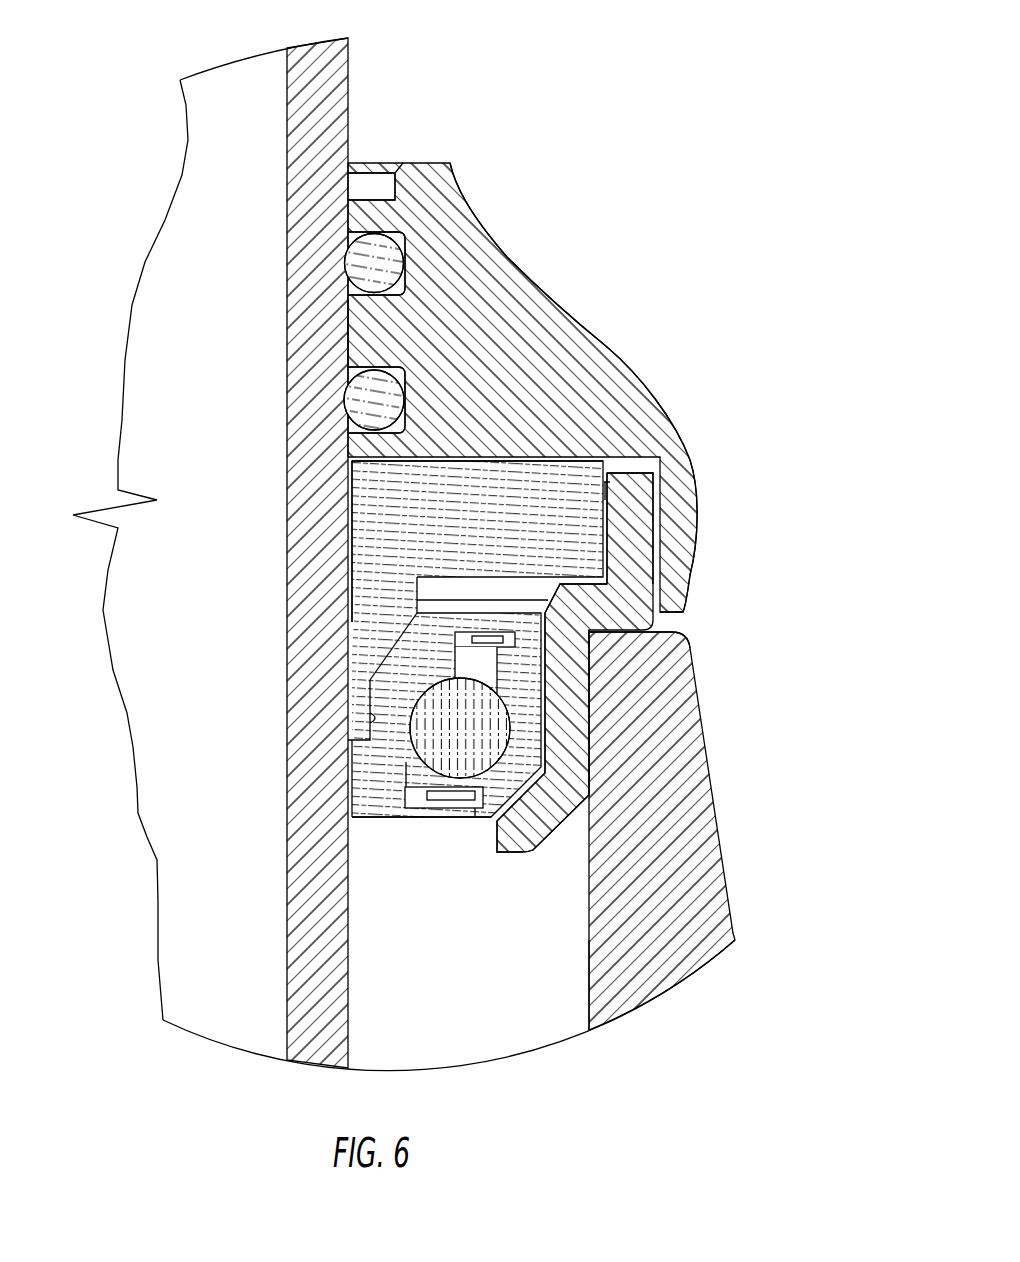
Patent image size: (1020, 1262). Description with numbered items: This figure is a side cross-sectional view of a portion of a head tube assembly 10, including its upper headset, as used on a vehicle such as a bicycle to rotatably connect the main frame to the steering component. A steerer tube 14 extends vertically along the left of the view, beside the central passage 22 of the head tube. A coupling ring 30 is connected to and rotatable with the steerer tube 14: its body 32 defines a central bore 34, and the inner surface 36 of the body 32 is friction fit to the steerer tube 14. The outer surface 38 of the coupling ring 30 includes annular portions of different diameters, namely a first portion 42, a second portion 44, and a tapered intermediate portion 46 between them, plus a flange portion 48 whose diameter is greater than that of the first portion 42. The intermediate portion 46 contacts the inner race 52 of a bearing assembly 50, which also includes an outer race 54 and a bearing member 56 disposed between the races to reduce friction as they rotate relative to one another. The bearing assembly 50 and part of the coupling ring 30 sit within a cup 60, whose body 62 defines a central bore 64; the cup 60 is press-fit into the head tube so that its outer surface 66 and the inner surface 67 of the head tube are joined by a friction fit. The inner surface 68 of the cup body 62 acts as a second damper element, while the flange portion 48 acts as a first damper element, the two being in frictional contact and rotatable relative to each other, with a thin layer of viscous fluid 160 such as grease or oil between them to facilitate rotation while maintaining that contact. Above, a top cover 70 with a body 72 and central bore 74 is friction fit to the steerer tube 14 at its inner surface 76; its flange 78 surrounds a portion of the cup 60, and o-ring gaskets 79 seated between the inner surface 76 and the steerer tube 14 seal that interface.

The head tube assembly 10 is at (717, 222).
The steerer tube 14 is at (388, 92).
The central passage 22 is at (474, 1019).
The coupling ring 30 is at (387, 705).
The body 32 is at (413, 497).
The central bore 34 is at (345, 566).
The inner surface 36 is at (350, 488).
The outer surface 38 is at (378, 691).
The first portion 42 is at (420, 580).
The second portion 44 is at (370, 737).
The intermediate portion 46 is at (400, 643).
The flange portion 48 is at (607, 530).
The bearing assembly 50 is at (438, 823).
The inner race 52 is at (373, 796).
The outer race 54 is at (502, 790).
The bearing member 56 is at (470, 778).
The cup 60 is at (660, 866).
The body 62 is at (578, 790).
The central bore 64 is at (600, 632).
The outer surface 66 is at (646, 662).
The inner surface 67 is at (589, 970).
The inner surface 68 is at (520, 605).
The top cover 70 is at (476, 346).
The body 72 is at (468, 240).
The central bore 74 is at (382, 163).
The inner surface 76 is at (287, 333).
The flange 78 is at (692, 478).
The gaskets 79 is at (343, 273).
The fluid 160 is at (606, 496).